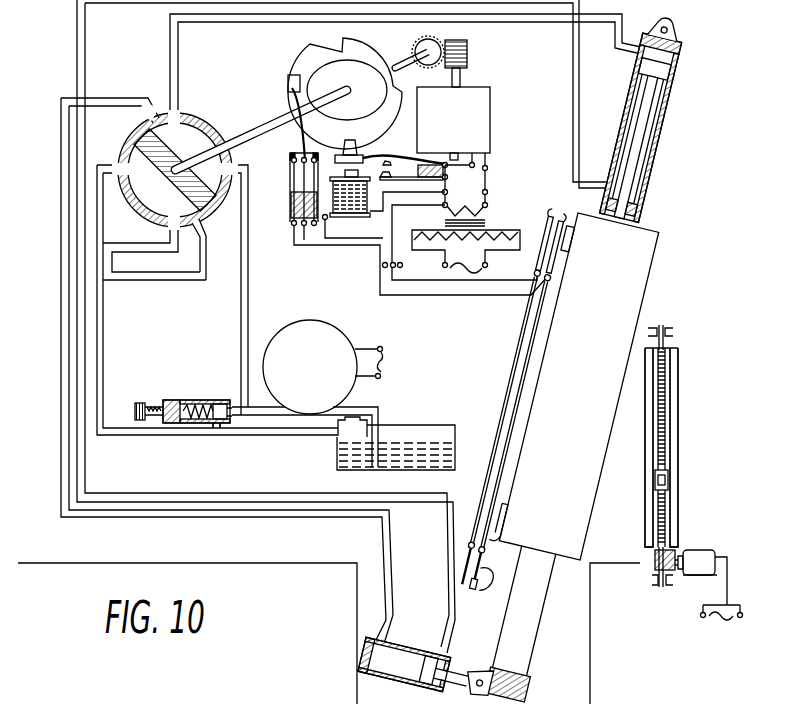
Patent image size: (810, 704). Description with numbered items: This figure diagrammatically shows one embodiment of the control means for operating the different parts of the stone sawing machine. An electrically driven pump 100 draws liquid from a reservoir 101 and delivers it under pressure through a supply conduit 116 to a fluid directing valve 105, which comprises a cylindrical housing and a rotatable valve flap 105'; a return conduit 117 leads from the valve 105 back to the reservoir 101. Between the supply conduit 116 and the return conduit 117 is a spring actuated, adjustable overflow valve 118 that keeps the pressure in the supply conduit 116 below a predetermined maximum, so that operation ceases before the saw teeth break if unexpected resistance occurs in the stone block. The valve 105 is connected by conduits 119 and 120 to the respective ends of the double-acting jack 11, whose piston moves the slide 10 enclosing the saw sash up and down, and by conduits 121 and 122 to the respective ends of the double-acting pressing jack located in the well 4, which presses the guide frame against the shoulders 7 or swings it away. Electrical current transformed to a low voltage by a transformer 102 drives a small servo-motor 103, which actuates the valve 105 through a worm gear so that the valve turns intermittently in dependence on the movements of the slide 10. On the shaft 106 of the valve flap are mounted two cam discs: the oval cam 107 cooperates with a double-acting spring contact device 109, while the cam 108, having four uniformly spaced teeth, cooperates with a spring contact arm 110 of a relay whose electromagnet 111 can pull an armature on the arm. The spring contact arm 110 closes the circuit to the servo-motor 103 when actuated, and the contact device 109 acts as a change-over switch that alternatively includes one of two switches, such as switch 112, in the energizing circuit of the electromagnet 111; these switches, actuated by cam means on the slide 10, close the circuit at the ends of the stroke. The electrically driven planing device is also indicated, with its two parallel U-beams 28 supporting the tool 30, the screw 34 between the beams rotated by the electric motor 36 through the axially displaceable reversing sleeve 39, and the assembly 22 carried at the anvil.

The well 4 is at (578, 665).
The shoulders 7 is at (619, 698).
The slide 10 is at (587, 388).
The double-acting hydraulic jack 11 is at (626, 114).
The guide frame 22 is at (680, 503).
The U-beams 28 is at (674, 382).
The tool 30 is at (668, 475).
The screw 34 is at (665, 427).
The electric motor 36 is at (698, 550).
The sleeve 39 is at (655, 567).
The pump 100 is at (316, 320).
The reservoir 101 is at (405, 432).
The transformer 102 is at (488, 222).
The servo-motor 103 is at (484, 108).
The fluid directing valve 105 is at (175, 166).
The valve flap 105' is at (221, 247).
The shaft 106 is at (293, 97).
The cam disc 107 is at (311, 80).
The cam disc 108 is at (308, 54).
The double-acting spring contact device 109 is at (291, 216).
The spring contact arm 110 is at (373, 154).
The electromagnet 111 is at (368, 216).
The switch 112 is at (546, 219).
The supply conduit 116 is at (241, 302).
The return conduit 117 is at (103, 356).
The overflow valve 118 is at (206, 398).
The conduit 119 is at (170, 53).
The conduit 120 is at (85, 22).
The conduit 121 is at (60, 358).
The conduit 122 is at (86, 468).